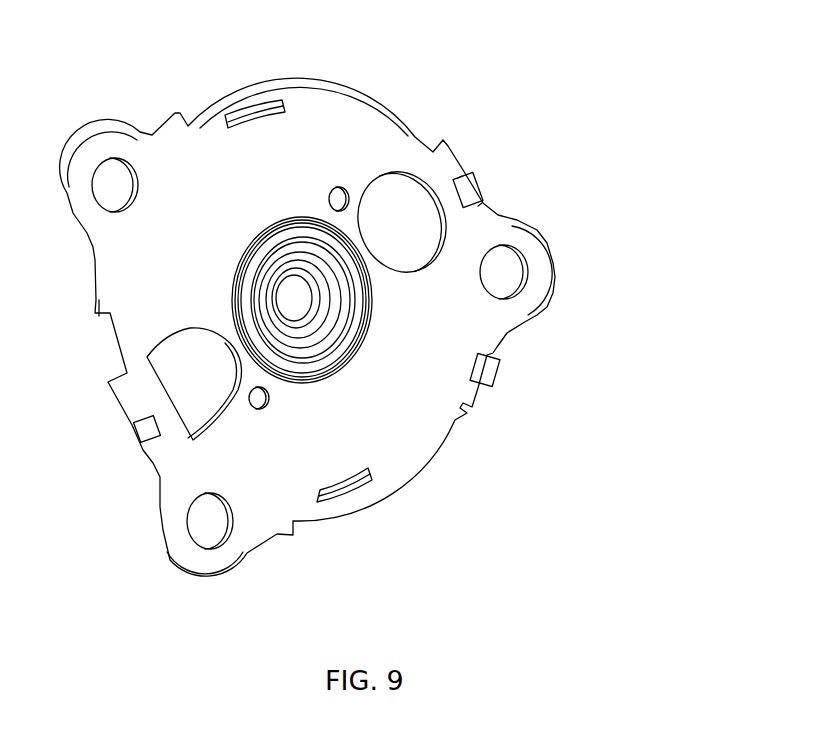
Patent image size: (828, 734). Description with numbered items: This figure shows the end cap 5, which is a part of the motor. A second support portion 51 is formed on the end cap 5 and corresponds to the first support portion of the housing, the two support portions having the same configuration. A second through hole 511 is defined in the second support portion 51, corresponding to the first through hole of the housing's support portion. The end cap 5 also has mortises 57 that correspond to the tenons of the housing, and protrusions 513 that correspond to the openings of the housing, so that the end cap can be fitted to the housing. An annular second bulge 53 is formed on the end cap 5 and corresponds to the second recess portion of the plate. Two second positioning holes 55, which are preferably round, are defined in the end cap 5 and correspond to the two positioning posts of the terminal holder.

The end cap 5 is at (292, 167).
The second support portion 51 is at (517, 313).
The second through hole 511 is at (495, 272).
The protrusions 513 is at (470, 185).
The second bulge 53 is at (355, 333).
The second positioning holes 55 is at (268, 405).
The mortises 57 is at (247, 113).